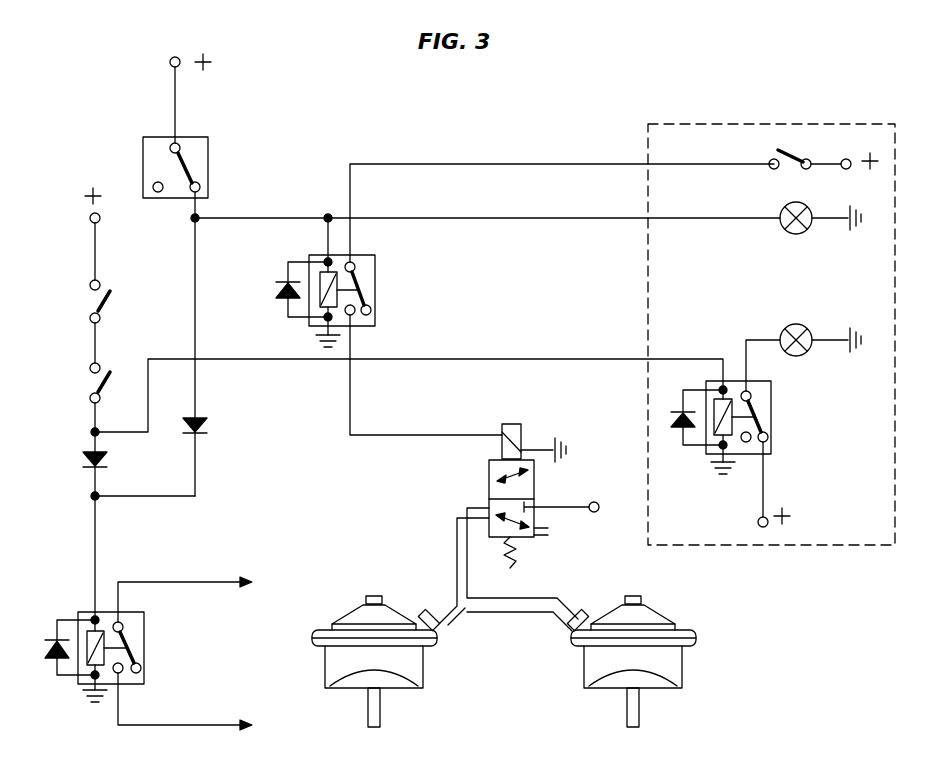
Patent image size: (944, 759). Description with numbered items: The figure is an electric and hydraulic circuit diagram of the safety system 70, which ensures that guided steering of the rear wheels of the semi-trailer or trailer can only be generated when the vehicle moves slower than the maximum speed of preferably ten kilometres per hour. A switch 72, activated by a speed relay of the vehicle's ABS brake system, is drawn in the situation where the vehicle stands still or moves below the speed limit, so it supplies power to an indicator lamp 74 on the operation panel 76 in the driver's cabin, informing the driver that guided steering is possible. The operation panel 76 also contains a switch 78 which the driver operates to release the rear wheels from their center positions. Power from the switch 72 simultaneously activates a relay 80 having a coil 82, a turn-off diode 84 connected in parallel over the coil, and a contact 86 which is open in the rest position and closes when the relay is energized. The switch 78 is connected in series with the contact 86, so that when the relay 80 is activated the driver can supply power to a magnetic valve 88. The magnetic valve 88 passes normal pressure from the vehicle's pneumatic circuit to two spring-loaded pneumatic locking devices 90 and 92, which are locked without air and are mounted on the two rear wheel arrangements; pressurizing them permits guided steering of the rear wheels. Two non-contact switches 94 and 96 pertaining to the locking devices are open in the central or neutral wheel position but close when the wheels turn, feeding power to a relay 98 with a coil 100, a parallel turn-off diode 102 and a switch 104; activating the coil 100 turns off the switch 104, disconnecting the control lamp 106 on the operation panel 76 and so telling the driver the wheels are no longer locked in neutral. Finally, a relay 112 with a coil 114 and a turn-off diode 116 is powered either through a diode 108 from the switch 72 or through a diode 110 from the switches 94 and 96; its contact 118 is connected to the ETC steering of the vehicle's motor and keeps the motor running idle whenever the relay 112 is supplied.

The safety system 70 is at (280, 192).
The switch 72 is at (148, 157).
The indicator lamp 74 is at (790, 233).
The operation panel 76 is at (737, 137).
The switch 78 is at (797, 155).
The relay 80 is at (372, 274).
The coil 82 is at (318, 280).
The turn-off diode 84 is at (280, 300).
The contact 86 is at (370, 297).
The magnetic valve 88 is at (489, 478).
The spring-loaded pneumatic locking device 90 is at (410, 665).
The spring-loaded pneumatic locking device 92 is at (672, 665).
The switch 94 is at (107, 300).
The switch 96 is at (105, 382).
The relay 98 is at (724, 447).
The coil 100 is at (722, 425).
The turn-off diode 102 is at (680, 419).
The switch 104 is at (792, 433).
The control lamp 106 is at (800, 324).
The diode 108 is at (208, 428).
The diode 110 is at (107, 460).
The relay 112 is at (146, 630).
The coil 114 is at (95, 655).
The turn-off diode 116 is at (57, 625).
The contact 118 is at (138, 655).